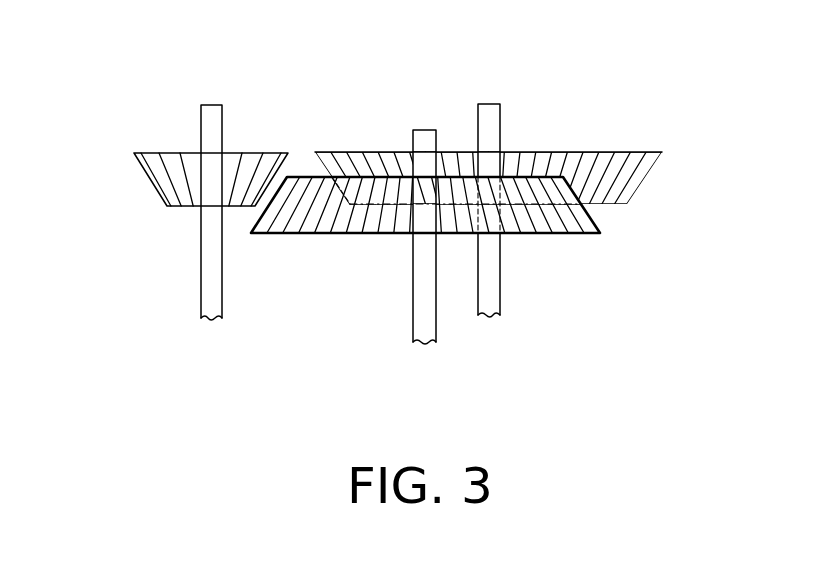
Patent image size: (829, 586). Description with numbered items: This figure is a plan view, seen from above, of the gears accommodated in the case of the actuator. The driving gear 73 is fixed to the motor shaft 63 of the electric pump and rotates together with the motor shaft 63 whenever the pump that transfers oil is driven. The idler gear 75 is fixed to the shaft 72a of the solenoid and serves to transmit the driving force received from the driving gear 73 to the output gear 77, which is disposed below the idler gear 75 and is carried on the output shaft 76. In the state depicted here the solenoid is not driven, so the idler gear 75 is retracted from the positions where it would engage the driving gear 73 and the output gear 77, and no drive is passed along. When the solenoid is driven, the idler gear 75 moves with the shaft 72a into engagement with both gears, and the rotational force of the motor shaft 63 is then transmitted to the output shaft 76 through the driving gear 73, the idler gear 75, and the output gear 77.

The motor shaft 63 is at (215, 103).
The driving gear 73 is at (155, 187).
The idler gear 75 is at (303, 176).
The shaft of the solenoid 72a is at (413, 302).
The output shaft 76 is at (493, 102).
The output gear 77 is at (645, 182).